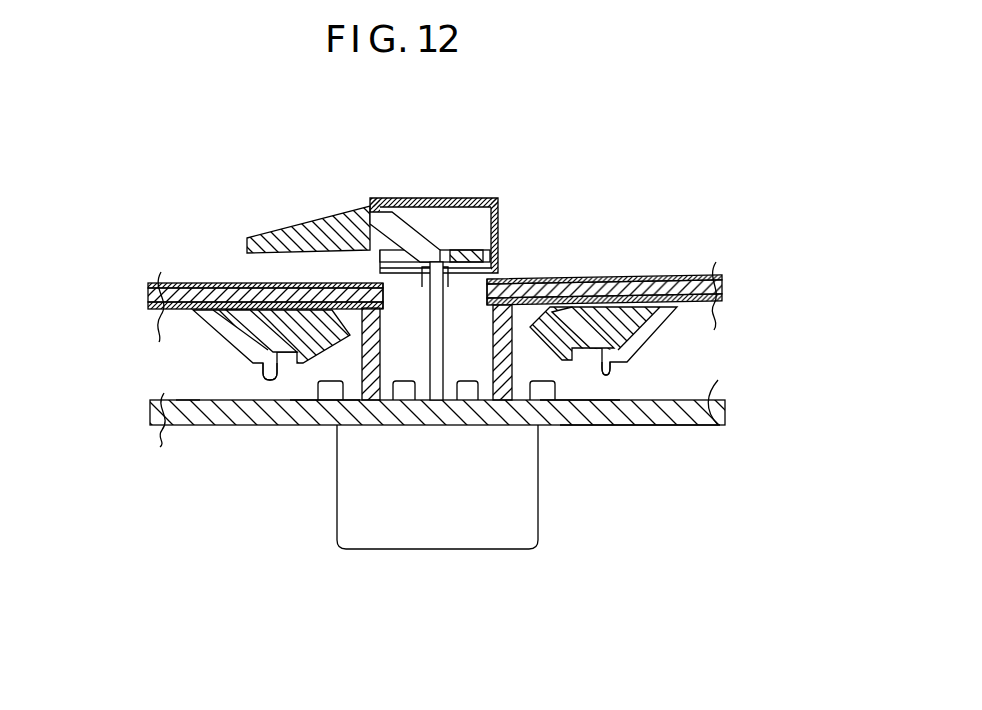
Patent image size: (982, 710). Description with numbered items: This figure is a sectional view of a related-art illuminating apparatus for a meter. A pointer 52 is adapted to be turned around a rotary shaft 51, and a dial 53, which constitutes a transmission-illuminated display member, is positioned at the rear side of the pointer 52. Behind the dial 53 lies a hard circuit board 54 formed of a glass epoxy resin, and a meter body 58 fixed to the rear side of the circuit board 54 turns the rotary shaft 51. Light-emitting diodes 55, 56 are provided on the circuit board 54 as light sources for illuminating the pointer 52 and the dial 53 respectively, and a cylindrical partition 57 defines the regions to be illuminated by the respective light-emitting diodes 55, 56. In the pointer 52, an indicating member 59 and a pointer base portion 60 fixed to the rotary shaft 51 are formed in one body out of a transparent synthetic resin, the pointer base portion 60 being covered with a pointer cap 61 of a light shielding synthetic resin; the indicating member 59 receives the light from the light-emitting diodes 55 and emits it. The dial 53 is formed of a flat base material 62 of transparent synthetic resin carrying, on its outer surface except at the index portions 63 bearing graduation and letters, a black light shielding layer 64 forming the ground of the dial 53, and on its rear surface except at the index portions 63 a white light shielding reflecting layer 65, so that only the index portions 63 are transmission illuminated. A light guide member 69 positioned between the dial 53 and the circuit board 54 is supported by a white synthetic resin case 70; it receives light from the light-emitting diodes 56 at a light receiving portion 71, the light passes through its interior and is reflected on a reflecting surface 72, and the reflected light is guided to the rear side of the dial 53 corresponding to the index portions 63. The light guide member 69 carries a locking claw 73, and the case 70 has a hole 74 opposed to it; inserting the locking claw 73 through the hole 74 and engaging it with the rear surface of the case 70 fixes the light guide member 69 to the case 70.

The rotary shaft 51 is at (430, 323).
The pointer 52 is at (456, 178).
The dial 53 is at (693, 260).
The circuit board 54 is at (645, 417).
The light-emitting diodes 55 is at (407, 394).
The light-emitting diodes 56 is at (333, 399).
The cylindrical partition 57 is at (317, 402).
The meter body 58 is at (363, 472).
The indicating member 59 is at (283, 238).
The pointer base portion 60 is at (455, 250).
The pointer cap 61 is at (482, 198).
The base material 62 is at (189, 286).
The index portions 63 is at (190, 285).
The light shielding layer 64 is at (227, 286).
The light shielding reflecting layer 65 is at (240, 330).
The light guide member 69 is at (601, 279).
The case 70 is at (600, 358).
The light receiving portion 71 is at (353, 285).
The reflecting surface 72 is at (620, 334).
The locking claw 73 is at (265, 365).
The hole 74 is at (672, 418).